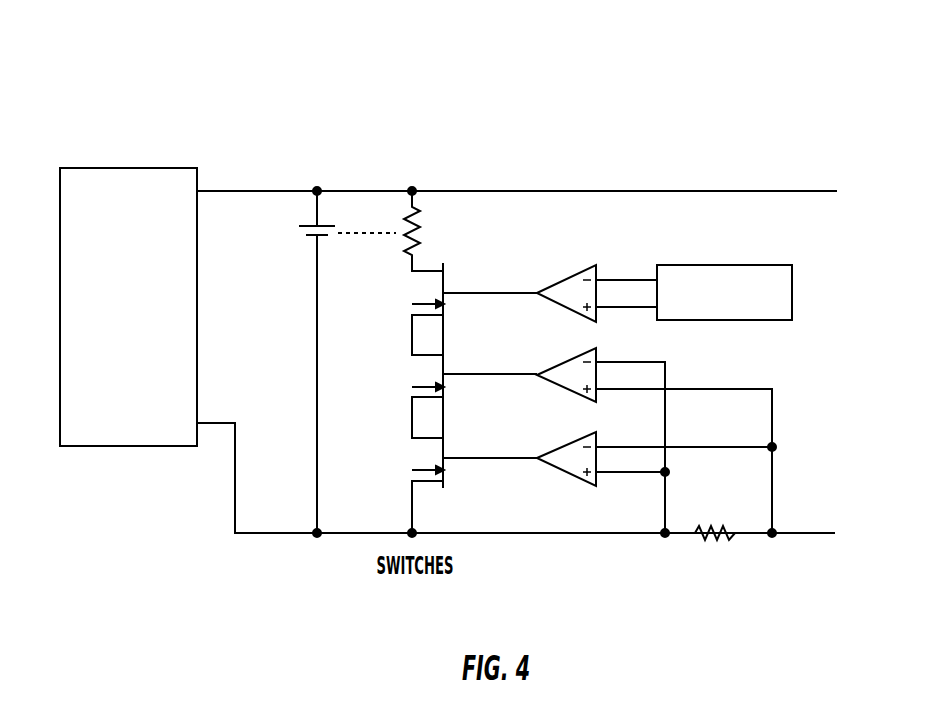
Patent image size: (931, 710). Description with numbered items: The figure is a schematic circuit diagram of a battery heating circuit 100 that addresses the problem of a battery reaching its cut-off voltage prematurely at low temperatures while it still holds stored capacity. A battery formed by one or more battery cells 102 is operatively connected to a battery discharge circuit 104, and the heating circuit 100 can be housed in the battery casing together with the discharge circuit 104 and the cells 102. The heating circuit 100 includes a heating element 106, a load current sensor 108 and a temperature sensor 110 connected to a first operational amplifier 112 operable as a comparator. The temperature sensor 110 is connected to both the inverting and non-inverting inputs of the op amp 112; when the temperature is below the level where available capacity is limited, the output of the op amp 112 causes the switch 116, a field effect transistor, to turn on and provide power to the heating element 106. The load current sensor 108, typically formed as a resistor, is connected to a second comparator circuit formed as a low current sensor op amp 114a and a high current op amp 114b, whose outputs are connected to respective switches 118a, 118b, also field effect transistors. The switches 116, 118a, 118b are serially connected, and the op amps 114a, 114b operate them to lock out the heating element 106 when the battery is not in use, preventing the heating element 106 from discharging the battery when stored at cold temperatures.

The battery heating circuit 100 is at (549, 106).
The battery cells 102 is at (318, 226).
The battery discharge circuit 104 is at (141, 168).
The heating element 106 is at (418, 208).
The load current sensor 108 is at (736, 537).
The temperature sensor 110 is at (742, 265).
The first operational amplifier 112 is at (570, 272).
The low current sensor op amp 114a is at (590, 374).
The high current op amp 114b is at (588, 457).
The switch 116 is at (418, 287).
The switch 118a is at (418, 370).
The switch 118b is at (420, 452).